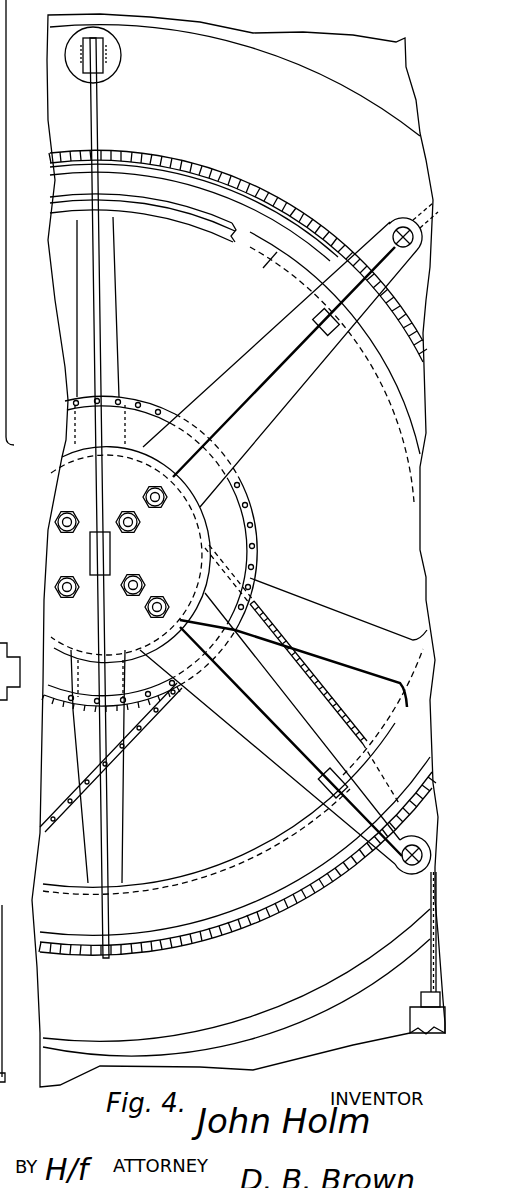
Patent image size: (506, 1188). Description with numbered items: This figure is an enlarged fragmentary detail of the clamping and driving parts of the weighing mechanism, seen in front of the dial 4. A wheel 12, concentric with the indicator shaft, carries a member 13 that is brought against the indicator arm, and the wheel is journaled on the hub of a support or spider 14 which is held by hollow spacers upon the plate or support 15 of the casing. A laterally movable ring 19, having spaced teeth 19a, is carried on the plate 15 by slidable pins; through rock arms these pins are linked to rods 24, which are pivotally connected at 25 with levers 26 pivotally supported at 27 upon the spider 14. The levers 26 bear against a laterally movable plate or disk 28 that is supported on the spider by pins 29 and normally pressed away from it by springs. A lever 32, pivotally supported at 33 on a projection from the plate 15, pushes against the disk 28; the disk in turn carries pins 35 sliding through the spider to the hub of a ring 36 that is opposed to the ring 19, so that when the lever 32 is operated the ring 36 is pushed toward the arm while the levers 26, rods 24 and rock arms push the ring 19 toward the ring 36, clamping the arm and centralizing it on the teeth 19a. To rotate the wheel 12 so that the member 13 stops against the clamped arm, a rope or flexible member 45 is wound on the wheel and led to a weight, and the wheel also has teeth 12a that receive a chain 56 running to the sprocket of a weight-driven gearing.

The dial 4 is at (237, 863).
The wheel 12 is at (149, 428).
The teeth 12a is at (84, 766).
The member 13 is at (97, 917).
The support or spider 14 is at (256, 447).
The plate or support 15 is at (235, 106).
The laterally movable ring 19 is at (205, 182).
The spaced teeth 19a is at (178, 158).
The rods 24 is at (412, 874).
The pivotal connection 25 is at (398, 228).
The levers 26 is at (278, 378).
The pivot 27 is at (323, 786).
The laterally movable plate or disk 28 is at (132, 555).
The pins 29 is at (126, 555).
The lever 32 is at (101, 99).
The pivot 33 is at (106, 60).
The pins 35 is at (56, 529).
The ring 36 is at (327, 374).
The rope or flexible member 45 is at (333, 732).
The chain 56 is at (140, 728).